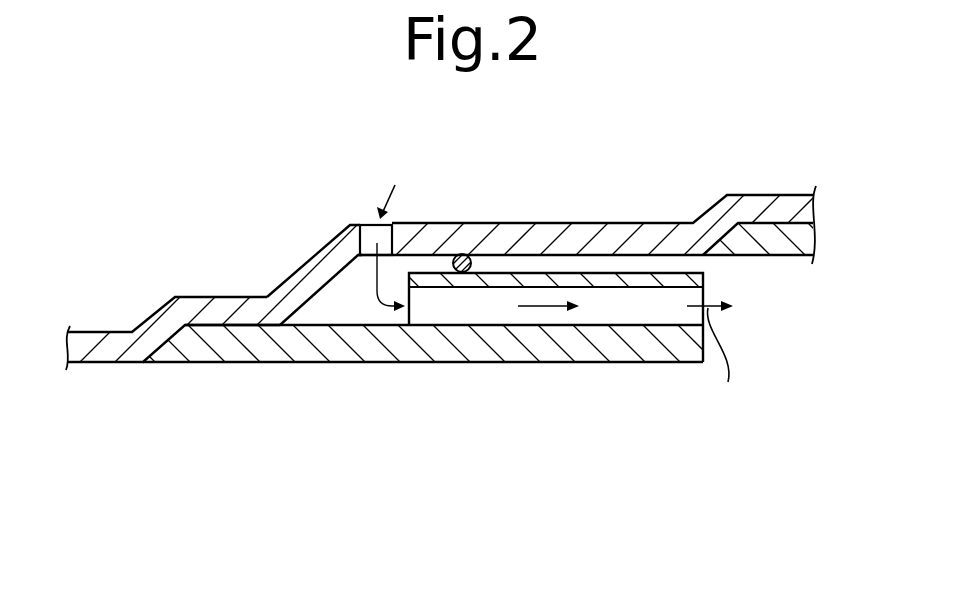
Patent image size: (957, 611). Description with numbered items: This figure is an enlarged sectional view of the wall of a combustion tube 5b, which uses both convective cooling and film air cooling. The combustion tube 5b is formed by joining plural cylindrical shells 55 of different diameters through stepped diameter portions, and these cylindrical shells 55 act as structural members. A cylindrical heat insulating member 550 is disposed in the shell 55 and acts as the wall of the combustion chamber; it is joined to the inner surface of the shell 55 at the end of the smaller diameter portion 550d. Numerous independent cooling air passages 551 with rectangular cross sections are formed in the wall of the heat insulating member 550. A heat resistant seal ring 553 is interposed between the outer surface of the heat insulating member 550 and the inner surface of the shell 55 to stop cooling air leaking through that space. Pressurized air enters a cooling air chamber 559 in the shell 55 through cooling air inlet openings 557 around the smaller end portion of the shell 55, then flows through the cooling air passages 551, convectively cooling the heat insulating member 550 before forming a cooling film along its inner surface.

The combustion tube 5b is at (474, 210).
The cylindrical shell 55 is at (437, 228).
The heat insulating member 550 is at (340, 353).
The smaller diameter portion 550d is at (235, 333).
The cooling air passage 551 is at (462, 313).
The seal ring 553 is at (462, 254).
The cooling air inlet opening 557 is at (372, 222).
The cooling air chamber 559 is at (342, 293).